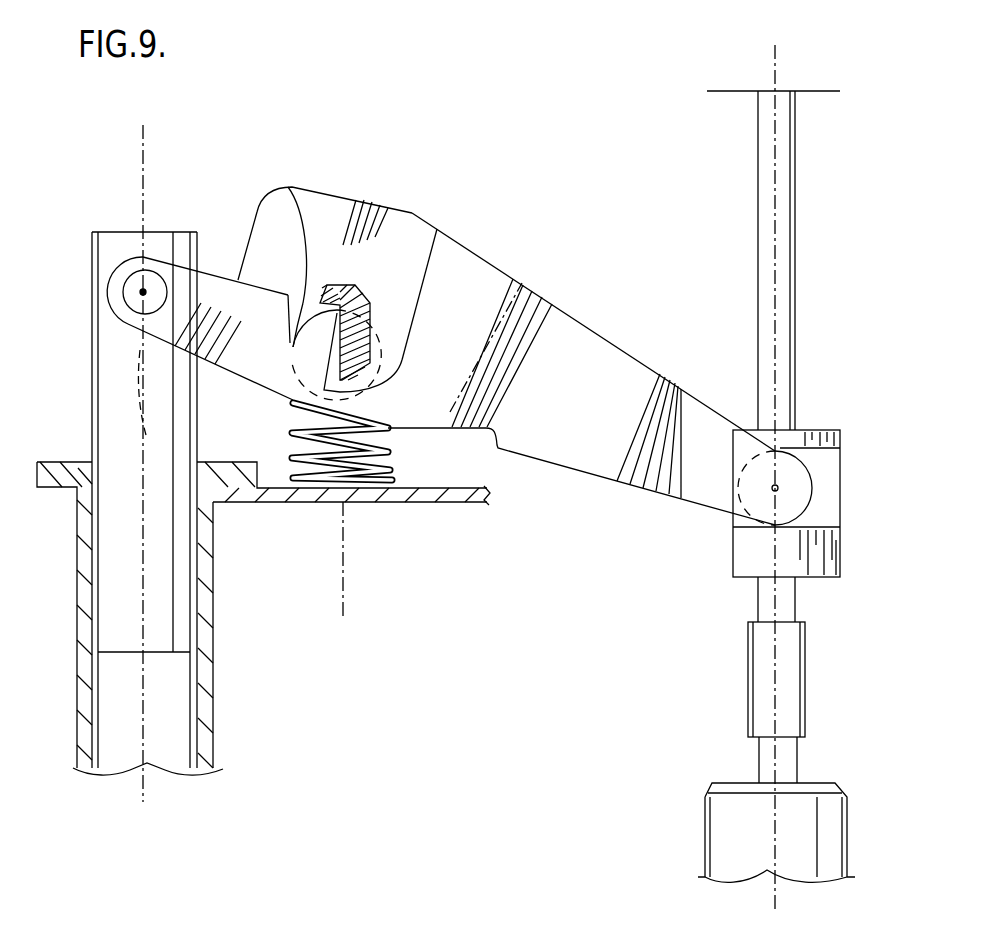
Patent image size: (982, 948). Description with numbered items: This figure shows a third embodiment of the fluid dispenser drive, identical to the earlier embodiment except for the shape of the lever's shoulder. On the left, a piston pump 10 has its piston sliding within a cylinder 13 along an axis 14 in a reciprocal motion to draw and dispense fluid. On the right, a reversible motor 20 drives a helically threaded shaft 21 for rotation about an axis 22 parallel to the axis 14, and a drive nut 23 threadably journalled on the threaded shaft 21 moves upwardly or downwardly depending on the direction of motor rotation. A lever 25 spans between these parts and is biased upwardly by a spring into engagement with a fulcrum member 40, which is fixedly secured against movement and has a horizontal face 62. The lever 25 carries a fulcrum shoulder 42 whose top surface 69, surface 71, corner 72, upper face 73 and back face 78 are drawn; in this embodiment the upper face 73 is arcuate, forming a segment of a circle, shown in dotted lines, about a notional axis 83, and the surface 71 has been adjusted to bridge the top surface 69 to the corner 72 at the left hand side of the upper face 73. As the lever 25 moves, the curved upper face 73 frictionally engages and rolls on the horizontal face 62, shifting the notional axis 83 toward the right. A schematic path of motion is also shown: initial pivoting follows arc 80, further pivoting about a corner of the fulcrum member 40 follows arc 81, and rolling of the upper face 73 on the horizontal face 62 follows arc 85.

The piston pump 10 is at (112, 237).
The cylinder 13 is at (213, 620).
The axis 14 is at (148, 137).
The reversible motor 20 is at (715, 813).
The helically threaded shaft 21 is at (760, 138).
The axis 22 is at (770, 57).
The drive nut 23 is at (740, 553).
The lever 25 is at (556, 289).
The fulcrum member 40 is at (372, 264).
The fulcrum shoulder 42 is at (220, 270).
The horizontal face 62 is at (338, 290).
The top surface 69 is at (273, 288).
The surface 71 is at (288, 313).
The corner 72 is at (290, 347).
The upper face 73 is at (288, 186).
The back face 78 is at (418, 302).
The arc 80 is at (126, 407).
The arc 81 is at (130, 318).
The notional axis 83 is at (362, 338).
The arc 85 is at (140, 252).